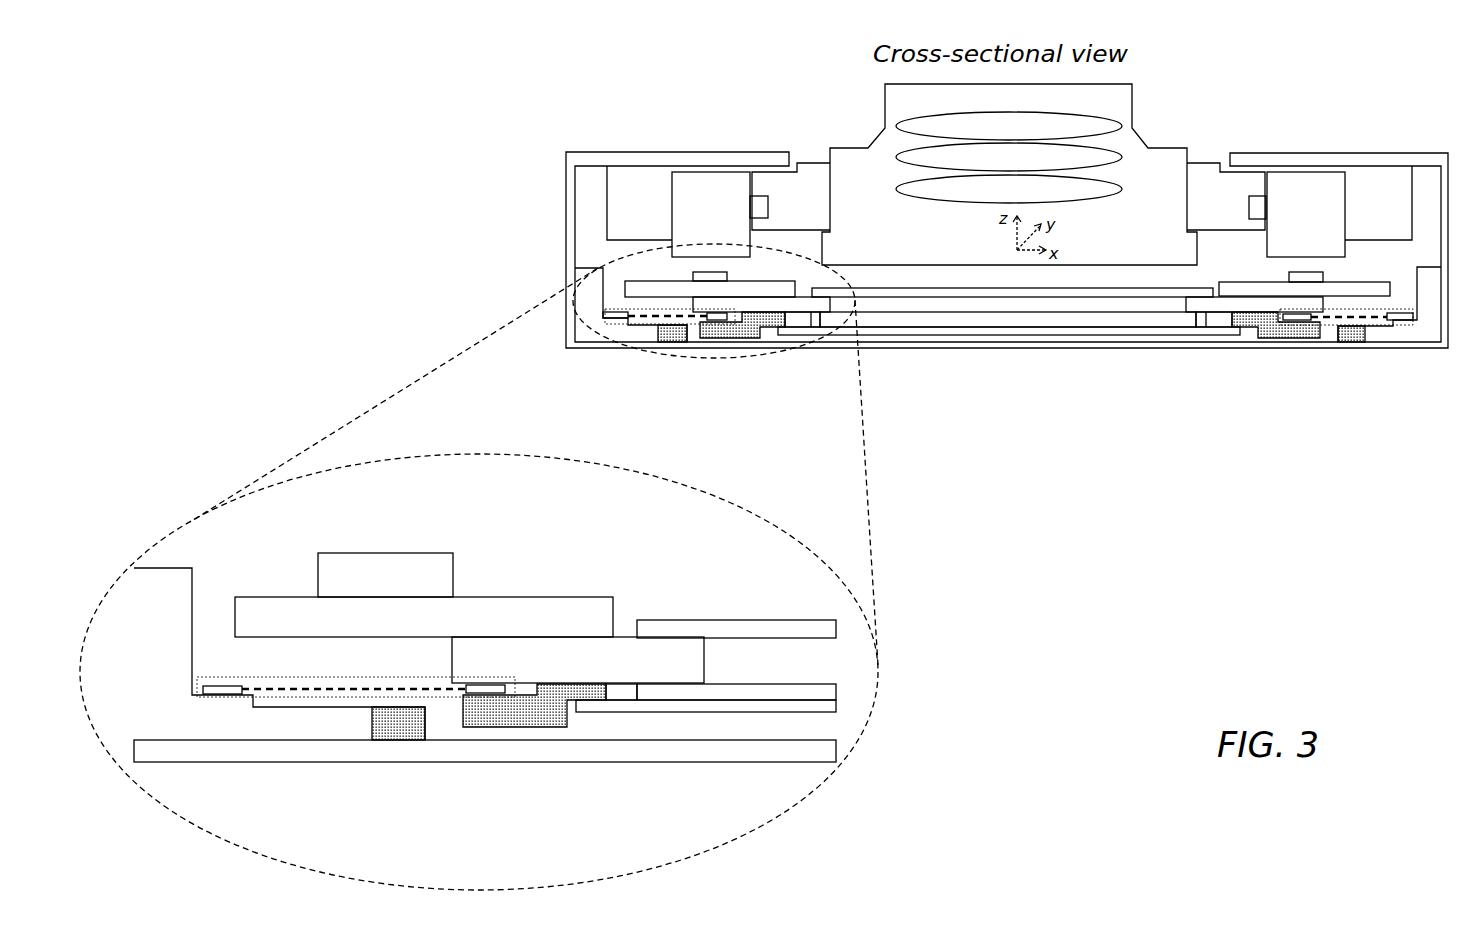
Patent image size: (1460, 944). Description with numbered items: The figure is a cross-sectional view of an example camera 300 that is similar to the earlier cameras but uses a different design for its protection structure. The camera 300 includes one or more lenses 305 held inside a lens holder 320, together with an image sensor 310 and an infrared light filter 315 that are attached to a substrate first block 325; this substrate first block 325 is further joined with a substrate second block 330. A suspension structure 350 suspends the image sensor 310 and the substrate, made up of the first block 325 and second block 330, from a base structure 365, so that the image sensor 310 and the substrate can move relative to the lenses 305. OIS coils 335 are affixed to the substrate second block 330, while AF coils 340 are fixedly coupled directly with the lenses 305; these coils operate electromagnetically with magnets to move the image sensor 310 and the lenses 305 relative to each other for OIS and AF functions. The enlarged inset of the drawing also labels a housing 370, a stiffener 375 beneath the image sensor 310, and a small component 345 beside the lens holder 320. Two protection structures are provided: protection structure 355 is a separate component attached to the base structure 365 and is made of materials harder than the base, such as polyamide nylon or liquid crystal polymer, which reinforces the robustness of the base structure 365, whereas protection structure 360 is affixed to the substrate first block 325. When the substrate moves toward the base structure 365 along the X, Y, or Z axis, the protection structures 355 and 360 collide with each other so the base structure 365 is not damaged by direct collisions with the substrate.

The camera 300 is at (614, 112).
The lenses 305 is at (1128, 118).
The image sensor 310 is at (1042, 322).
The infrared light filter 315 is at (952, 291).
The lens holder 320 is at (882, 231).
The substrate first block 325 is at (1204, 313).
The substrate second block 330 is at (1243, 289).
The OIS coils 335 is at (437, 590).
The AF coils 340 is at (1322, 220).
The position sensor 345 is at (1249, 207).
The suspension structure 350 is at (1406, 312).
The protection structure 355 is at (1351, 336).
The protection structure 360 is at (1277, 327).
The base structure 365 is at (1428, 328).
The housing 370 is at (1434, 155).
The stiffener 375 is at (1142, 330).